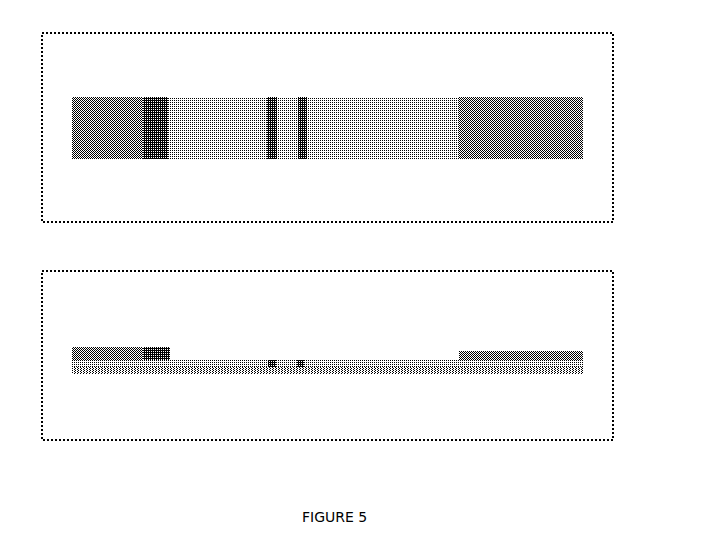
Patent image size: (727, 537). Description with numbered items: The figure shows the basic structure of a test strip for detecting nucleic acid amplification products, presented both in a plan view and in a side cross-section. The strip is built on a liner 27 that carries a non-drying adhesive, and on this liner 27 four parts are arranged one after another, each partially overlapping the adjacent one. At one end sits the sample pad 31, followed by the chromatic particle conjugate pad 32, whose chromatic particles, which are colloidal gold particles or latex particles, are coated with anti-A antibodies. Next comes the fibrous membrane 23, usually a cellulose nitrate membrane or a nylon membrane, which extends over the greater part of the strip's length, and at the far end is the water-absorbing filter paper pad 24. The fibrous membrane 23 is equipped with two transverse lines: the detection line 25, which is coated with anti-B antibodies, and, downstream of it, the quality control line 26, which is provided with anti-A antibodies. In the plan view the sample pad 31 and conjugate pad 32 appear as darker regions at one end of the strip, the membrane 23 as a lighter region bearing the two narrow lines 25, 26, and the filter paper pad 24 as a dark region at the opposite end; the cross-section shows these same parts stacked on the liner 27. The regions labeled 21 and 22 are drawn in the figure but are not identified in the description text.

The first electrode region 21 is at (108, 214).
The second electrode region 22 is at (170, 113).
The fibrous membrane 23 is at (327, 240).
The water-absorbing filter paper pad 24 is at (520, 216).
The detection line 25 is at (263, 254).
The quality control line 26 is at (309, 255).
The liner 27 is at (327, 390).
The sample pad 31 is at (107, 329).
The chromatic particle conjugate pad 32 is at (169, 329).